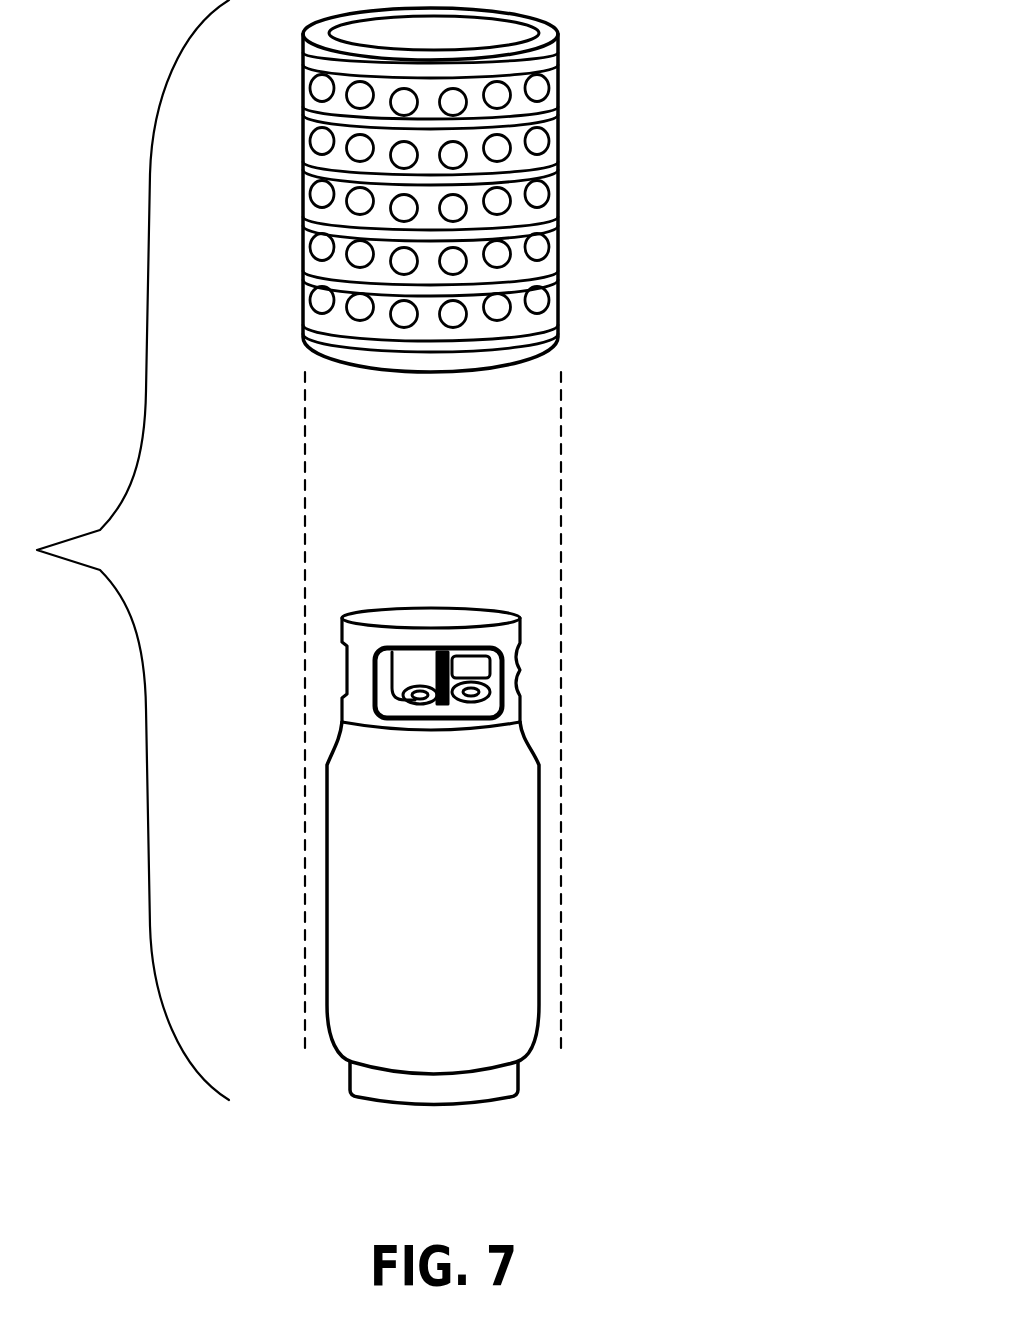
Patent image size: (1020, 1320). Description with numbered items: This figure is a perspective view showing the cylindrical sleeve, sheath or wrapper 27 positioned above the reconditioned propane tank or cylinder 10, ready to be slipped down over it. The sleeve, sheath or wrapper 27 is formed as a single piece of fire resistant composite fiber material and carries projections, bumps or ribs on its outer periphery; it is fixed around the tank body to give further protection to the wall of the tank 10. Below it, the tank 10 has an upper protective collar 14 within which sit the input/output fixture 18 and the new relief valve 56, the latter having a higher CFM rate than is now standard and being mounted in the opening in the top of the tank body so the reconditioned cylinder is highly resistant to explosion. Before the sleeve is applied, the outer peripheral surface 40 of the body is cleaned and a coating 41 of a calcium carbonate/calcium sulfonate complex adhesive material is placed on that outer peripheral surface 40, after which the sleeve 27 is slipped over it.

The propane tank or cylinder 10 is at (590, 840).
The upper protective collar 14 is at (508, 638).
The input/output fixture 18 is at (483, 671).
The sleeve, sheath or wrapper 27 is at (522, 156).
The outer peripheral surface 40 is at (448, 881).
The coating 41 is at (457, 978).
The new relief valve 56 is at (422, 690).